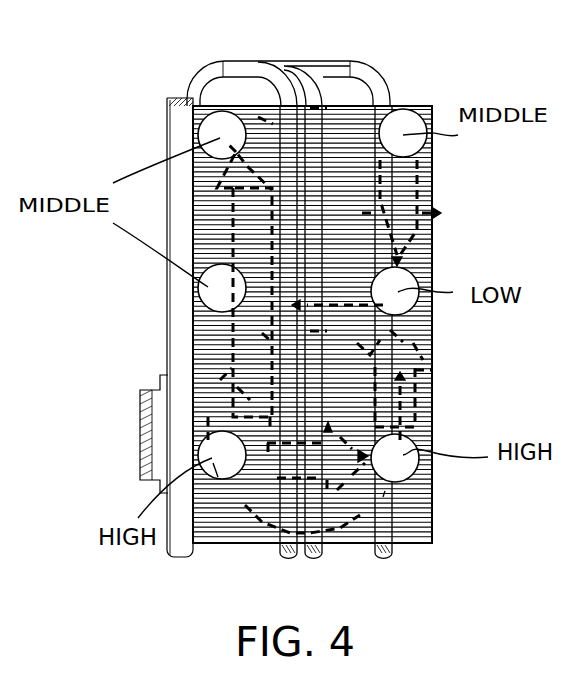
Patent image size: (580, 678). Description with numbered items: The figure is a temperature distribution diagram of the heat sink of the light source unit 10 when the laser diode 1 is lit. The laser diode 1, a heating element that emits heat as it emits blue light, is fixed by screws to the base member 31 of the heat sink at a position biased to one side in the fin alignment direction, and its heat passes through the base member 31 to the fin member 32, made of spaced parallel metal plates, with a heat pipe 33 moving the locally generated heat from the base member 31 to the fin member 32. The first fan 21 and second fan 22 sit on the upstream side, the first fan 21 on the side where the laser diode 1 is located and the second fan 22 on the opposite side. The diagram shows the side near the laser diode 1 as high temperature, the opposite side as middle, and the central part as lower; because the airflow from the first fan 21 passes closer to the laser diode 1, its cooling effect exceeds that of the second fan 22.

The light source unit 10 is at (93, 70).
The laser diode 1 is at (152, 387).
The first fan 21 is at (384, 500).
The second fan 22 is at (432, 183).
The base member 31 is at (178, 118).
The fin member 32 is at (410, 107).
The heat pipe 33 is at (242, 68).